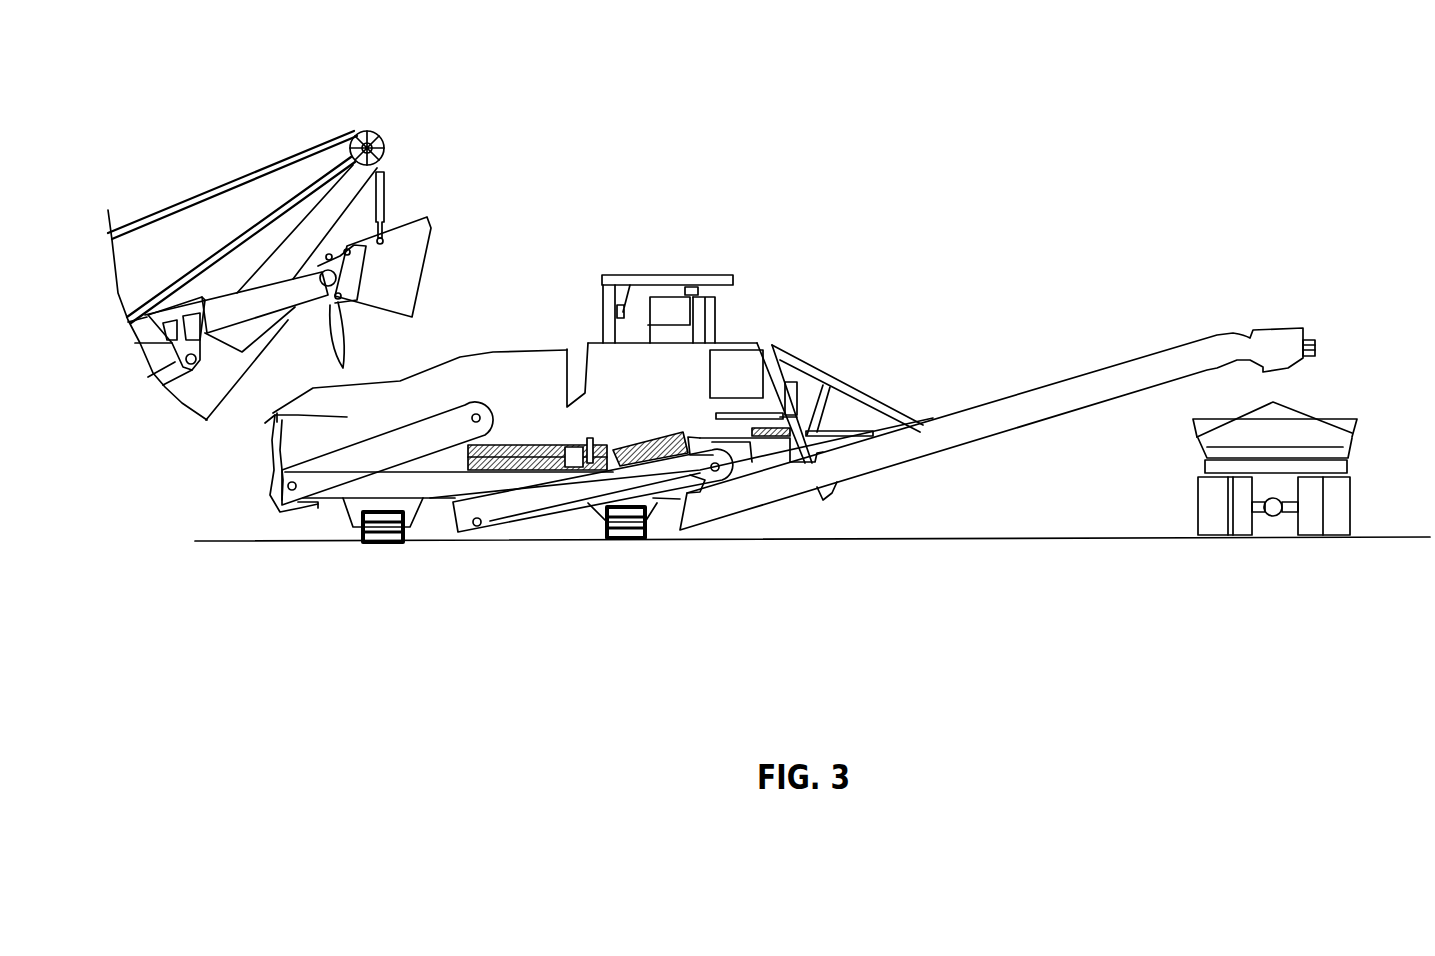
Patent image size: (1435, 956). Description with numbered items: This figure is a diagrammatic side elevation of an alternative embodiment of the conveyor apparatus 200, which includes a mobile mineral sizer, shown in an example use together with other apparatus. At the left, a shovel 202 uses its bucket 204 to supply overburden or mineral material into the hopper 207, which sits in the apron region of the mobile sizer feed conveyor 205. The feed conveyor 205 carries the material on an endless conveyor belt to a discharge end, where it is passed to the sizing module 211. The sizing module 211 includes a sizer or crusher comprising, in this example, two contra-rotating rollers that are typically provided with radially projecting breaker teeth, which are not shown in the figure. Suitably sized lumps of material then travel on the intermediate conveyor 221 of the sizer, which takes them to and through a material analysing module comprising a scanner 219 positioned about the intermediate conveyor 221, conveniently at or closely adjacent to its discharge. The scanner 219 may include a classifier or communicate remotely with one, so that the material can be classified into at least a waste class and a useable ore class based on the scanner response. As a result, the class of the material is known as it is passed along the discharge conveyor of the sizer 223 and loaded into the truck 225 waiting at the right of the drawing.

The conveyor apparatus 200 is at (573, 282).
The shovel 202 is at (208, 178).
The bucket 204 is at (430, 268).
The mobile sizer feed conveyor 205 is at (293, 500).
The hopper 207 is at (345, 410).
The sizing module 211 is at (466, 458).
The scanner 219 is at (642, 437).
The intermediate conveyor 221 is at (672, 480).
The discharge conveyor of the sizer 223 is at (1172, 367).
The truck 225 is at (1269, 557).